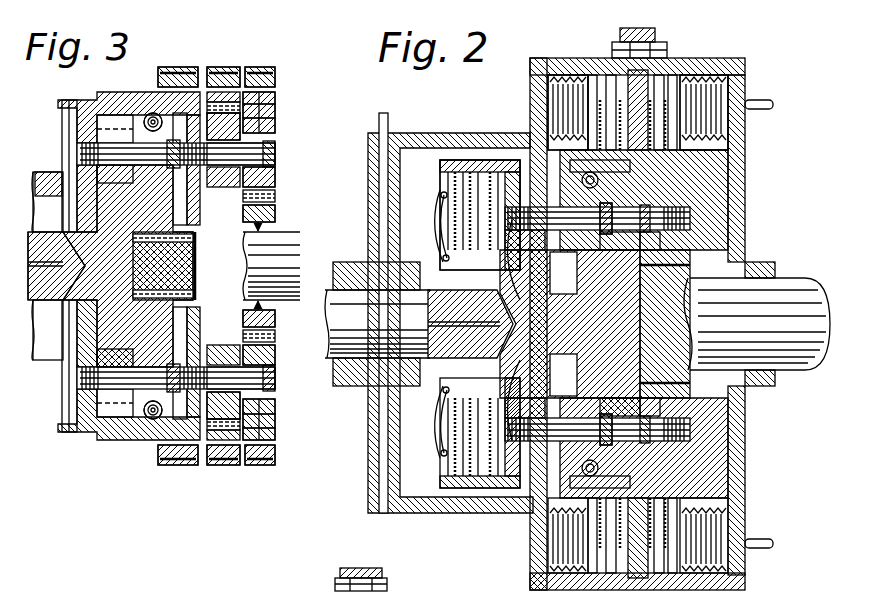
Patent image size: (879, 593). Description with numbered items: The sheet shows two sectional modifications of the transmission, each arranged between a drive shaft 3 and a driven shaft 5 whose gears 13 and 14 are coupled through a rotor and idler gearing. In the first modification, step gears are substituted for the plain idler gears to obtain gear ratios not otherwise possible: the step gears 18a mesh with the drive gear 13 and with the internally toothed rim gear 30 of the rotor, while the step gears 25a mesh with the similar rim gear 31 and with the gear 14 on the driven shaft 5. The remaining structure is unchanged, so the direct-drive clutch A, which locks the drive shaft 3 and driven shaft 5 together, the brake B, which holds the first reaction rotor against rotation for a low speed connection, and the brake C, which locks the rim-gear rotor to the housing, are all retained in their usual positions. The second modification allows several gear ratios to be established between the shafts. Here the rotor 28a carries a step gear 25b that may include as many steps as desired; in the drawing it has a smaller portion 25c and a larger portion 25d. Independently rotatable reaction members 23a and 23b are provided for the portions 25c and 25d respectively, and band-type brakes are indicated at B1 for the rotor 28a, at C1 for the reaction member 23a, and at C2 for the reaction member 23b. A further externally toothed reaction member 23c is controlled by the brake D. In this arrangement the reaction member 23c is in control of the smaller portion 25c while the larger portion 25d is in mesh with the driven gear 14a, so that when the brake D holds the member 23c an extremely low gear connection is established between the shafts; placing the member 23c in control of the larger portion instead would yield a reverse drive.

In FIG. 3, the drive shaft 3 is at (56, 266).
In FIG. 2, the drive shaft 3 is at (419, 324).
In FIG. 3, the driven shaft 5 is at (280, 232).
In FIG. 2, the driven shaft 5 is at (757, 324).
In FIG. 3, the gear 13 is at (118, 235).
In FIG. 2, the gear 13 is at (556, 294).
In FIG. 2, the gear 14 is at (665, 298).
In FIG. 3, the gear 14a is at (175, 232).
In FIG. 2, the step gears 18a is at (530, 148).
In FIG. 3, the reaction member 23a is at (268, 104).
In FIG. 3, the reaction member 23b is at (272, 92).
In FIG. 3, the externally toothed reaction member 23c is at (275, 180).
In FIG. 2, the step gears 25a is at (612, 215).
In FIG. 3, the step gear 25b is at (275, 150).
In FIG. 3, the smaller step or gear portion 25c is at (230, 128).
In FIG. 3, the larger step or gear portion 25d is at (270, 118).
In FIG. 3, the rotor 28a is at (148, 112).
In FIG. 2, the internally toothed gear portion 30 is at (512, 222).
In FIG. 2, the gear portion 31 is at (660, 238).
In FIG. 3, the clutch A is at (40, 178).
In FIG. 2, the clutch A is at (440, 196).
In FIG. 2, the brake B is at (720, 80).
In FIG. 3, the brake B1 is at (259, 65).
In FIG. 2, the brake C is at (545, 80).
In FIG. 3, the brake C1 is at (223, 484).
In FIG. 3, the brake C2 is at (180, 65).
In FIG. 3, the brake D is at (270, 200).